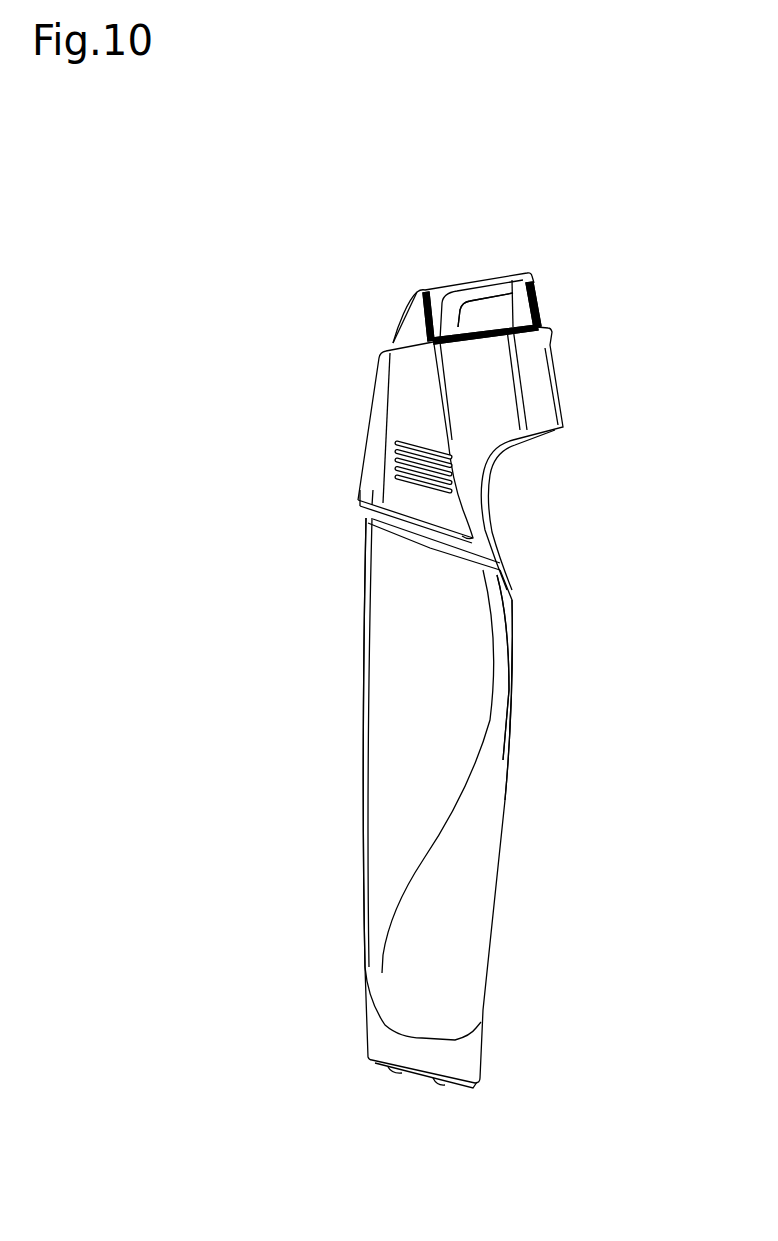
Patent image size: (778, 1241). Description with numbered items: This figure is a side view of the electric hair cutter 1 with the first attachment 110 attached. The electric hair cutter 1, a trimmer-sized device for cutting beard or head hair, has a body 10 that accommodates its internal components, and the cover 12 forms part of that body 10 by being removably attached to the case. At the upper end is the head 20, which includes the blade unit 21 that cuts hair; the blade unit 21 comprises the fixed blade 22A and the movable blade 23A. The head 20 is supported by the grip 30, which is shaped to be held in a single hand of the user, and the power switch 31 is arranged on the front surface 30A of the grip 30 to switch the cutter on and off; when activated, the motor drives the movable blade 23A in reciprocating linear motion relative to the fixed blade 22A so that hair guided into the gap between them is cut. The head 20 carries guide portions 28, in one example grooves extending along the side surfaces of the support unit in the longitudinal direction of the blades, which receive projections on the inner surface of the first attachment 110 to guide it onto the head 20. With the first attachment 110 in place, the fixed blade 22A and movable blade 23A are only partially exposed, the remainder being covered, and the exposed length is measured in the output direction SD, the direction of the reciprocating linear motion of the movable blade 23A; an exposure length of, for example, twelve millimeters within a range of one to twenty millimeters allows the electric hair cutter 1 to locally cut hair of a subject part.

The electric hair cutter 1 is at (283, 265).
The body 10 is at (537, 975).
The cover 12 is at (387, 768).
The head 20 is at (360, 328).
The blade unit 21 is at (508, 302).
The fixed blade 22A is at (547, 282).
The movable blade 23A is at (553, 315).
The guide portions 28 is at (427, 292).
The grip 30 is at (327, 973).
The front surface 30A is at (513, 687).
The power switch 31 is at (512, 738).
The first attachment 110 is at (563, 388).
The output direction SD is at (663, 275).